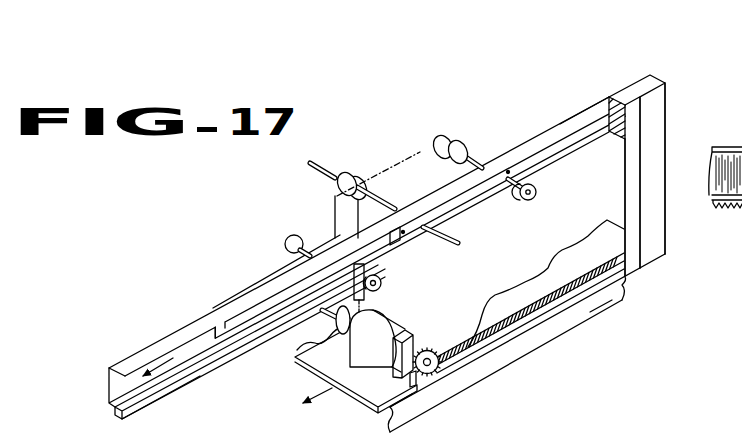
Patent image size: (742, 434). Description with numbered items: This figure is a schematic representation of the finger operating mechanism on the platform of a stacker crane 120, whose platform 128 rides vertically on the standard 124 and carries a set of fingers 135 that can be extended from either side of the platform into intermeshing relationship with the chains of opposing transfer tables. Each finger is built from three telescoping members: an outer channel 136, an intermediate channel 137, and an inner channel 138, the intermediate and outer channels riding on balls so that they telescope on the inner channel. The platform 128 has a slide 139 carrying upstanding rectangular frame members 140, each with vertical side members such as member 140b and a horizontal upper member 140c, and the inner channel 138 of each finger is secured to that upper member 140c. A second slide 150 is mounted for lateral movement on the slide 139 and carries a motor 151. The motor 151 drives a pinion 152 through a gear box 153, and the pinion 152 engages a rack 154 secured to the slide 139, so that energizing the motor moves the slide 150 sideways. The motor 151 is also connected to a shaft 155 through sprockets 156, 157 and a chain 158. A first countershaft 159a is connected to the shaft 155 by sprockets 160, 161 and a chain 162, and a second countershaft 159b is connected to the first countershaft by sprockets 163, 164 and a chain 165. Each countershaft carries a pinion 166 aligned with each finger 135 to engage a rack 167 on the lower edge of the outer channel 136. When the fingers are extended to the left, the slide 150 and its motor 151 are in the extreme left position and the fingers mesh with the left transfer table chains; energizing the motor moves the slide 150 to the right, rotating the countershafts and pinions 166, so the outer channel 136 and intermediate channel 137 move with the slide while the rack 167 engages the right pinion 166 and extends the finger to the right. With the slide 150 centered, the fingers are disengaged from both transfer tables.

The stacker crane 120 is at (649, 432).
The standard 124 is at (585, 428).
The platform 128 is at (652, 112).
The fingers 135 is at (241, 290).
The outer channel 136 is at (153, 345).
The intermediate channel 137 is at (222, 328).
The inner channel 138 is at (592, 114).
The slide 139 is at (603, 307).
The rectangular frame member 140 is at (652, 275).
The vertical side member 140b is at (652, 147).
The horizontal upper member 140c is at (633, 110).
The slide 150 is at (347, 372).
The motor 151 is at (384, 316).
The pinion 152 is at (433, 350).
The gear box 153 is at (363, 395).
The rack 154 is at (562, 305).
The shaft 155 is at (309, 164).
The sprocket 156 is at (340, 333).
The sprocket 157 is at (336, 190).
The chain 158 is at (337, 196).
The first countershaft 159a is at (512, 178).
The second countershaft 159b is at (285, 247).
The sprocket 160 is at (356, 188).
The sprocket 161 is at (455, 130).
The chain 162 is at (423, 143).
The sprocket 163 is at (463, 142).
The sprocket 164 is at (300, 232).
The chain 165 is at (410, 157).
The pinion 166 is at (381, 281).
The rack 167 is at (200, 373).